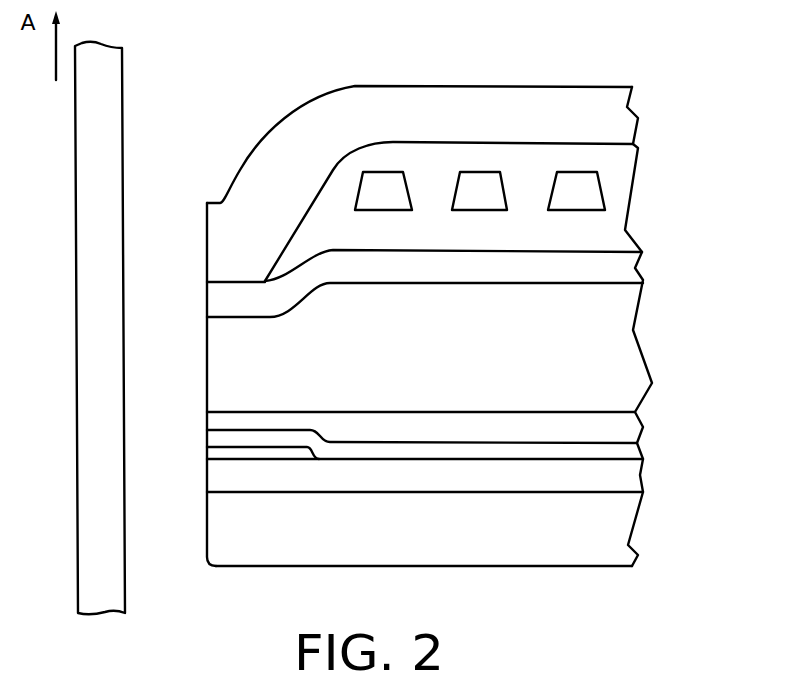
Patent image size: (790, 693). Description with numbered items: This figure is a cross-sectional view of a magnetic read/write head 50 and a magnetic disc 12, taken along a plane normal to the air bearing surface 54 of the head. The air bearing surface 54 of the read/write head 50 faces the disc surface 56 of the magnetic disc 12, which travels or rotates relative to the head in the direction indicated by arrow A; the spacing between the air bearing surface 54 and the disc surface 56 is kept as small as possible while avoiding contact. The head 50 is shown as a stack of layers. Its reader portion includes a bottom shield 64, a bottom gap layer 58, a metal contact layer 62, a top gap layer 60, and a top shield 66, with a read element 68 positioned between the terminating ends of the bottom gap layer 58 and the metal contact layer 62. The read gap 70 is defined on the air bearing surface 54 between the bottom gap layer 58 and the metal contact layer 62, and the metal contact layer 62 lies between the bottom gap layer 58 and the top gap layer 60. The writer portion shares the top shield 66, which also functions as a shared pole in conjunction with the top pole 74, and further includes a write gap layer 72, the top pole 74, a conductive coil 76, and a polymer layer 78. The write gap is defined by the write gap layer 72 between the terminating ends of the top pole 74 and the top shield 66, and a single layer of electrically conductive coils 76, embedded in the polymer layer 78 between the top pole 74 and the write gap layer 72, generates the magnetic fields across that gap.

The magnetic disc 12 is at (85, 122).
The magnetic read/write head 50 is at (648, 89).
The air bearing surface 54 is at (207, 228).
The disc surface 56 is at (124, 62).
The bottom gap layer 58 is at (516, 486).
The top gap layer 60 is at (517, 438).
The metal contact layer 62 is at (622, 451).
The bottom shield 64 is at (421, 541).
The top shield 66 is at (517, 370).
The read element 68 is at (240, 449).
The read gap 70 is at (188, 420).
The write gap layer 72 is at (514, 281).
The top pole 74 is at (548, 124).
The conductive coil 76 is at (398, 203).
The polymer layer 78 is at (515, 244).